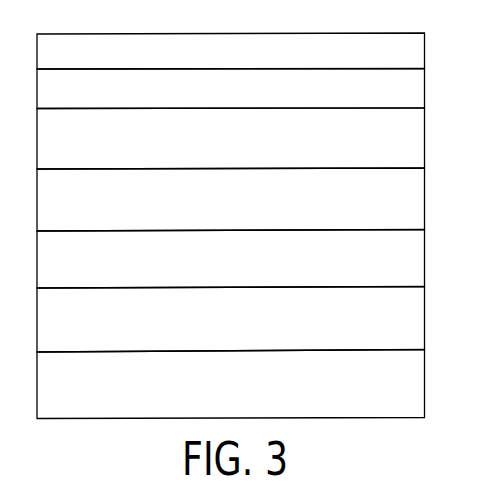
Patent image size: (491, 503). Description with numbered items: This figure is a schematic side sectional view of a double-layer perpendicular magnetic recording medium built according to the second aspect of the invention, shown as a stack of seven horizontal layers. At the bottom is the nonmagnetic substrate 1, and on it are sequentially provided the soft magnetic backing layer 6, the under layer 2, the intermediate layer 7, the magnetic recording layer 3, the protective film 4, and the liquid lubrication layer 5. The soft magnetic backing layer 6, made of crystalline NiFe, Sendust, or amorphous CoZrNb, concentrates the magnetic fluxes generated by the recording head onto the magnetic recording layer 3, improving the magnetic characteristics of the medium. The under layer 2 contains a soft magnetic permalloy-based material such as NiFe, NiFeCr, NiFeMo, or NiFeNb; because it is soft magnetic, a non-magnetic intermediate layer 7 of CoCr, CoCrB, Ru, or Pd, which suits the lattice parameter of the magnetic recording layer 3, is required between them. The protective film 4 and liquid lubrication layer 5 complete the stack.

The nonmagnetic substrate 1 is at (408, 393).
The under layer 2 is at (408, 261).
The magnetic recording layer 3 is at (408, 141).
The protective film 4 is at (408, 90).
The liquid lubrication layer 5 is at (408, 52).
The soft magnetic backing layer 6 is at (408, 319).
The intermediate layer 7 is at (408, 203).